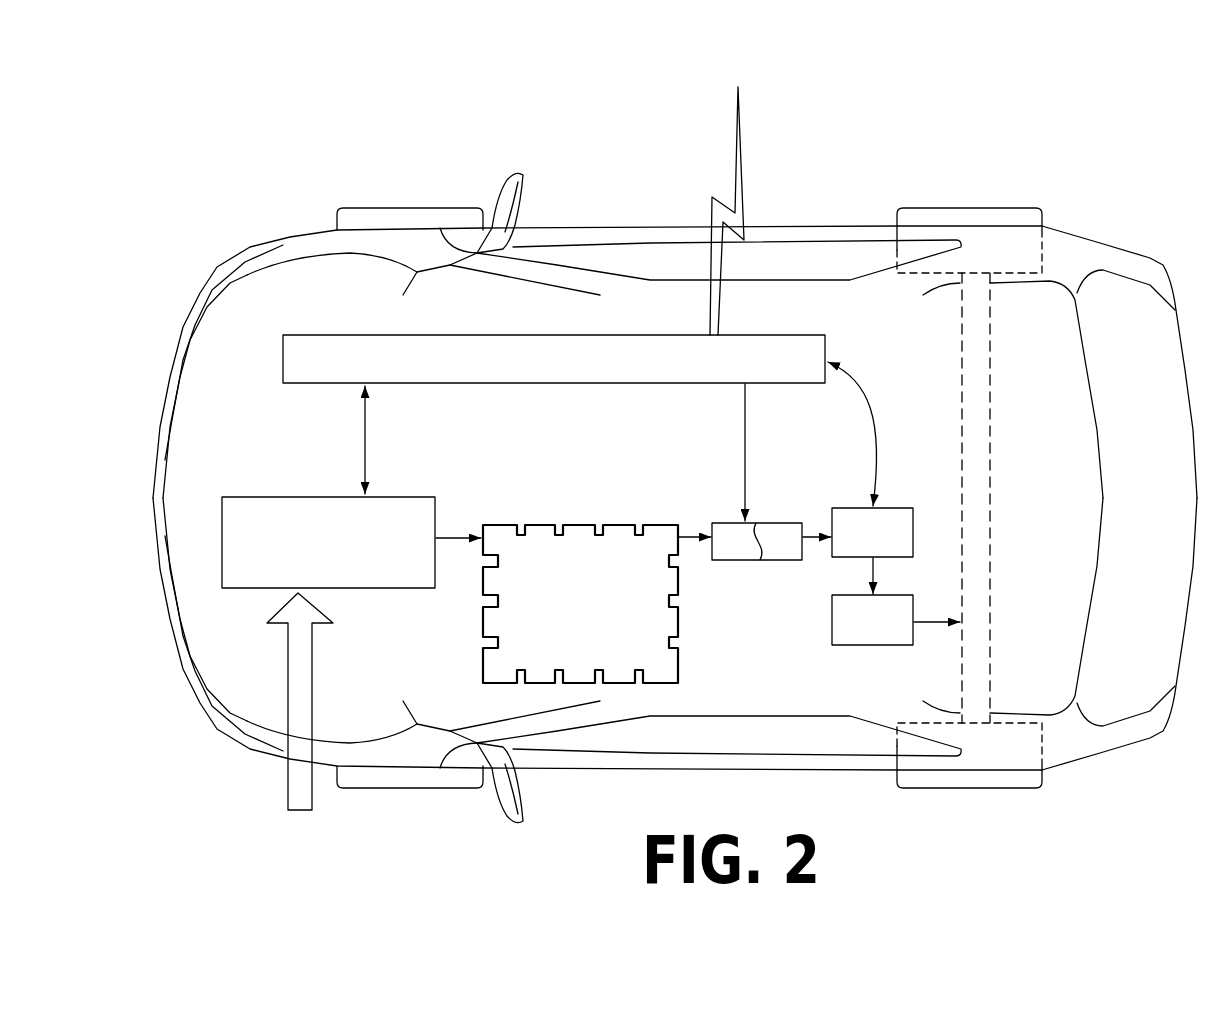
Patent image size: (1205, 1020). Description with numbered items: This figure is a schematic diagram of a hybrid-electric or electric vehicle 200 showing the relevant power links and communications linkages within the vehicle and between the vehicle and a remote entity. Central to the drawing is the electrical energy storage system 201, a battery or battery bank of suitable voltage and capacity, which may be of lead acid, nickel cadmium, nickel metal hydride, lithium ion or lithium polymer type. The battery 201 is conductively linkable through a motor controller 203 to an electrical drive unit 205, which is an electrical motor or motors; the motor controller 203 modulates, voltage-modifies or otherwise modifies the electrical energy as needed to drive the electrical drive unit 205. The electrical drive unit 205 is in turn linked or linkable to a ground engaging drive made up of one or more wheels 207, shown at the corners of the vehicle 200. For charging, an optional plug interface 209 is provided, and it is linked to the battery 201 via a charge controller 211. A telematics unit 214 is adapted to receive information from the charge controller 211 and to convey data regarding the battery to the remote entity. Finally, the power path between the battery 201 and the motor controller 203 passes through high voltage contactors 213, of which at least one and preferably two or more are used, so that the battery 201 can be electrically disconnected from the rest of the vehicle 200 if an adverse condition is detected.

The vehicle 200 is at (793, 200).
The electrical energy storage system 201 is at (564, 606).
The motor controller 203 is at (851, 544).
The electrical drive unit 205 is at (851, 632).
The wheels 207 is at (985, 220).
The plug interface 209 is at (288, 808).
The charge controller 211 is at (306, 556).
The high voltage contactors 213 is at (735, 522).
The telematics unit 214 is at (537, 370).